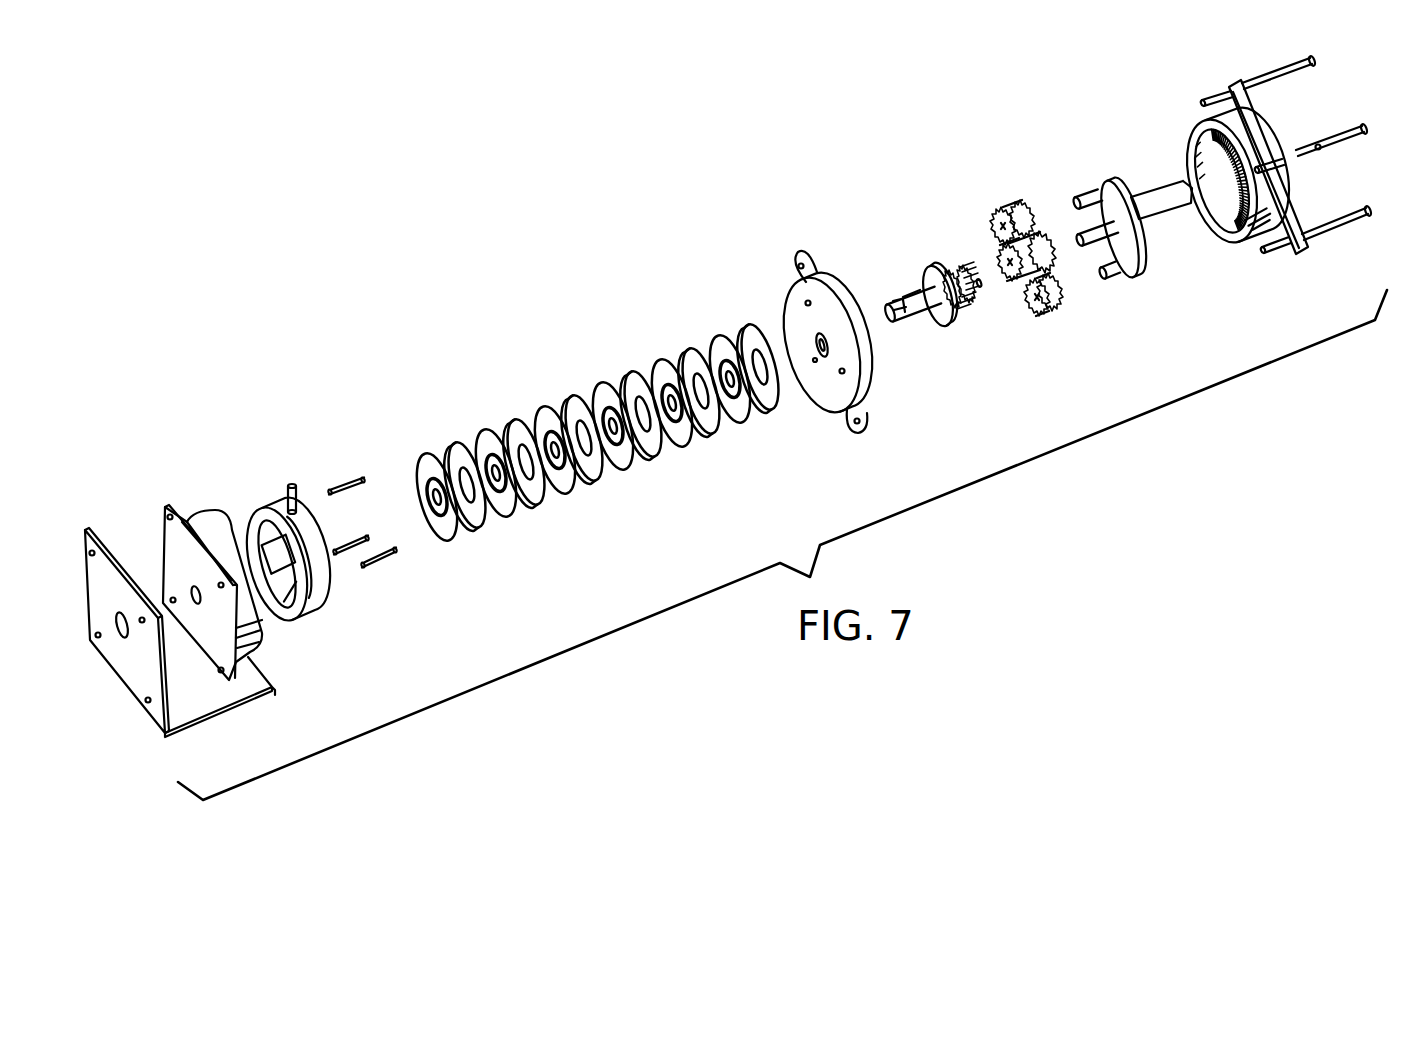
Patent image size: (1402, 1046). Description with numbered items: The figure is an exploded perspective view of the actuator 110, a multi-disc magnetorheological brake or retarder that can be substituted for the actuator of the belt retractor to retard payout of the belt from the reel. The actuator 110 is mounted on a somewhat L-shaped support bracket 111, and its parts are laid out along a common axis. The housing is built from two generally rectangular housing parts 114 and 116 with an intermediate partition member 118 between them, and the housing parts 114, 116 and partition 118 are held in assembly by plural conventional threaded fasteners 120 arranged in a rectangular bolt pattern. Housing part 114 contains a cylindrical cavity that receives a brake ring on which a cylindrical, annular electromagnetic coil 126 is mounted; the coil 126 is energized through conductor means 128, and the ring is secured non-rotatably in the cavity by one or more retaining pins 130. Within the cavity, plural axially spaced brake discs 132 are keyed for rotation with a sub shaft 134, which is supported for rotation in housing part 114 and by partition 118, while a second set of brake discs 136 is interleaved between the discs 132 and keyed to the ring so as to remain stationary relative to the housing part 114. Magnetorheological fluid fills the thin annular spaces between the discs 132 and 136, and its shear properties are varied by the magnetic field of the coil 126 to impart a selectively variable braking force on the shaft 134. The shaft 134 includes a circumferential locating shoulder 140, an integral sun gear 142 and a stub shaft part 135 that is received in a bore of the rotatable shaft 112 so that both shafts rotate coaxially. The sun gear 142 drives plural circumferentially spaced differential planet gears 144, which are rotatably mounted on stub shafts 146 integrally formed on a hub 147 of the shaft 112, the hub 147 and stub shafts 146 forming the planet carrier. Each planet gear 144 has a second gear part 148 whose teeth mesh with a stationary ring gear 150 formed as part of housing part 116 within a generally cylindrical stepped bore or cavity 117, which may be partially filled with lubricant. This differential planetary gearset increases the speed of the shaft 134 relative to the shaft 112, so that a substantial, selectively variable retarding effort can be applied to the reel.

The actuator 110 is at (708, 280).
The support bracket 111 is at (150, 715).
The rotatable shaft 112 is at (1163, 225).
The housing part 114 is at (200, 516).
The housing part 116 is at (1200, 123).
The stepped bore or cavity 117 is at (1206, 168).
The intermediate partition member 118 is at (869, 416).
The threaded fasteners 120 is at (1371, 210).
The electromagnetic coil 126 is at (316, 618).
The conductor means 128 is at (289, 484).
The retaining pins 130 is at (347, 486).
The brake discs 132 is at (543, 426).
The sub shaft 134 is at (905, 318).
The stub shaft part 135 is at (950, 268).
The brake discs 136 is at (594, 484).
The circumferential locating shoulder 140 is at (922, 293).
The sun gear 142 is at (974, 308).
The differential planet gears 144 is at (998, 212).
The stub shafts 146 is at (1080, 188).
The hub 147 is at (1120, 180).
The second gear part 148 is at (1040, 238).
The ring gear 150 is at (1243, 246).